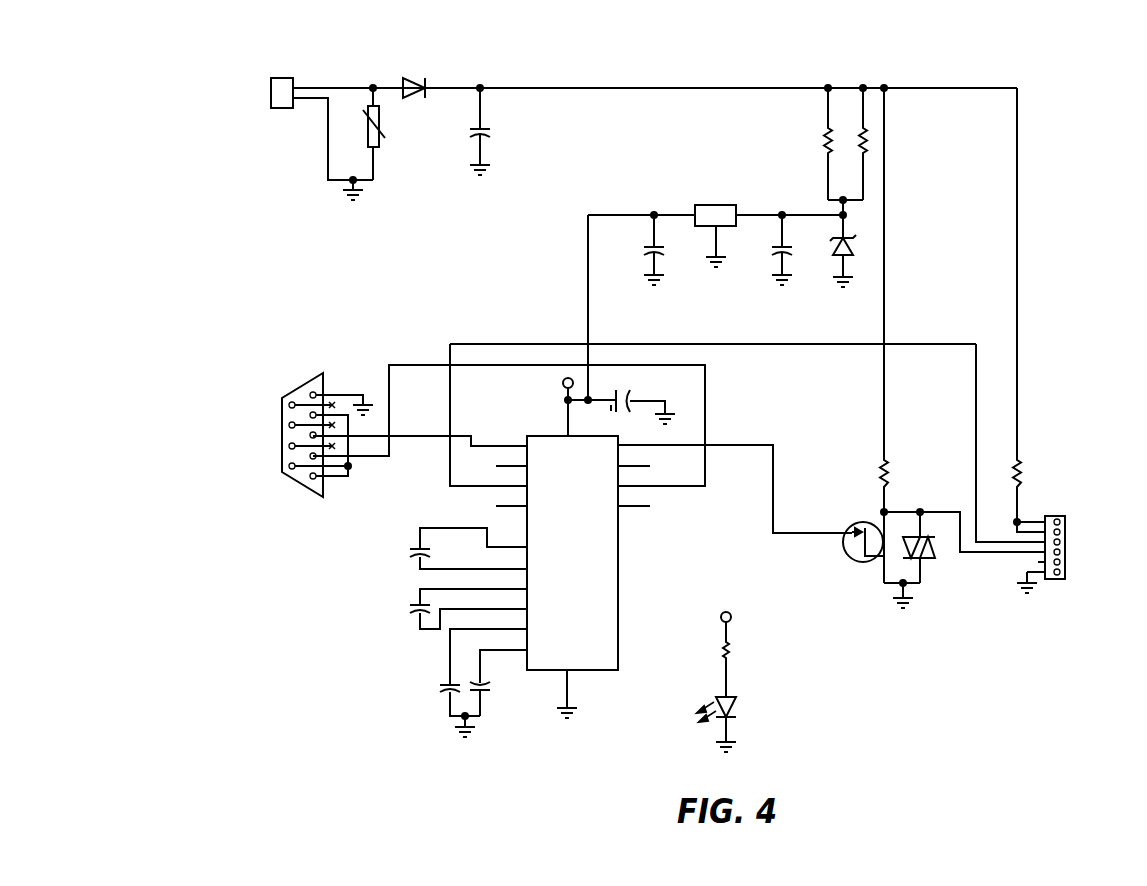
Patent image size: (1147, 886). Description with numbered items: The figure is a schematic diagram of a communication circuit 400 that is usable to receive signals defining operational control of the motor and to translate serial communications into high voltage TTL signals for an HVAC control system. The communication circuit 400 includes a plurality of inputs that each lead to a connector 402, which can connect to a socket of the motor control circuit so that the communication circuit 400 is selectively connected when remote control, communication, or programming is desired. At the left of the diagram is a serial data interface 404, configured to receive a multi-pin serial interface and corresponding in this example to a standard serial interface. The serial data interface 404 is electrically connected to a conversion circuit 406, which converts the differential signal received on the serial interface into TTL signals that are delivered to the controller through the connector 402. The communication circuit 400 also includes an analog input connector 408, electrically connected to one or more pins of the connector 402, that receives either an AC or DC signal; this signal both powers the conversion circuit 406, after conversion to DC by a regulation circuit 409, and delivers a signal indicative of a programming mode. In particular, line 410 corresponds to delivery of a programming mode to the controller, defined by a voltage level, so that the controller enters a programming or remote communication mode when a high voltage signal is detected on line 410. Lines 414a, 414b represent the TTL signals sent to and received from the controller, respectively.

The communication circuit 400 is at (302, 706).
The connector 402 is at (1053, 515).
The serial data interface 404 is at (300, 385).
The conversion circuit 406 is at (618, 530).
The analog input connector 408 is at (280, 78).
The regulation circuit 409 is at (710, 170).
The line 410 is at (1017, 320).
The line 414a is at (807, 344).
The line 414b is at (745, 445).